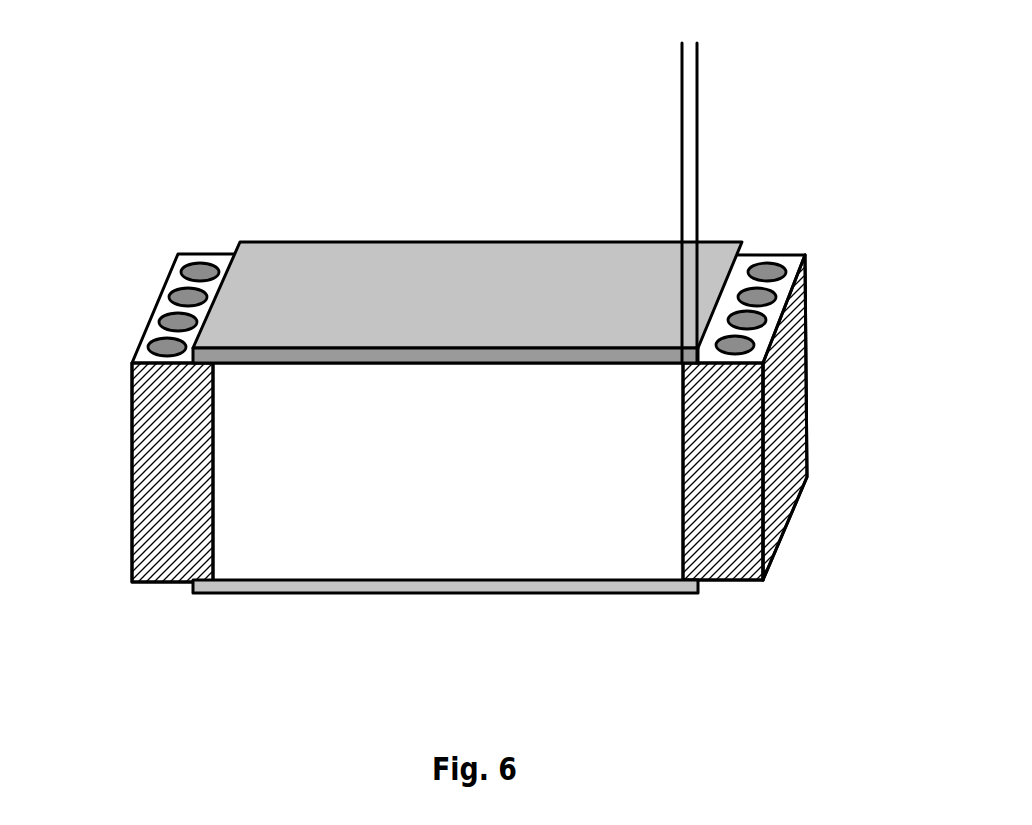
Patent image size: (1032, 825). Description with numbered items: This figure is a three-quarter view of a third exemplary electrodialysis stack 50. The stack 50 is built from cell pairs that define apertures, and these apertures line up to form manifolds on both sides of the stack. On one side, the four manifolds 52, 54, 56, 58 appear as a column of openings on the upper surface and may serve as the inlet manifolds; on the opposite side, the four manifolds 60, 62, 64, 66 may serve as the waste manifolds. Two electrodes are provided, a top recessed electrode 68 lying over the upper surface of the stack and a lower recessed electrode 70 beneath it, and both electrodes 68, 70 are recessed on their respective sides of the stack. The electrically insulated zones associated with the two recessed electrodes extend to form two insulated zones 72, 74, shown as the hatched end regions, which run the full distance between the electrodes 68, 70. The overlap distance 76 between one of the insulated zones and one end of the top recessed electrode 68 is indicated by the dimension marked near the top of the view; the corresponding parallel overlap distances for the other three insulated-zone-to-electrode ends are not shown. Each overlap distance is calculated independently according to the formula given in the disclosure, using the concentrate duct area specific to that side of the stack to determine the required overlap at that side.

The stack 50 is at (492, 190).
The inlet manifold 52 is at (182, 257).
The inlet manifold 54 is at (170, 297).
The inlet manifold 56 is at (160, 325).
The inlet manifold 58 is at (150, 355).
The waste manifold 60 is at (793, 257).
The waste manifold 62 is at (780, 289).
The waste manifold 64 is at (762, 323).
The waste manifold 66 is at (757, 350).
The top recessed electrode 68 is at (332, 250).
The recessed electrode 70 is at (370, 583).
The insulated zone 72 is at (157, 545).
The insulated zone 74 is at (735, 545).
The overlap distance 76 is at (718, 71).